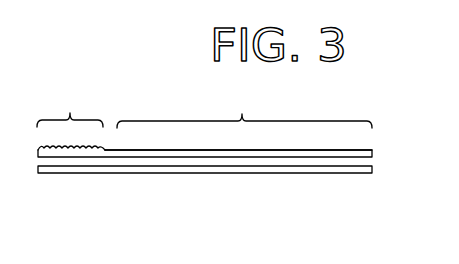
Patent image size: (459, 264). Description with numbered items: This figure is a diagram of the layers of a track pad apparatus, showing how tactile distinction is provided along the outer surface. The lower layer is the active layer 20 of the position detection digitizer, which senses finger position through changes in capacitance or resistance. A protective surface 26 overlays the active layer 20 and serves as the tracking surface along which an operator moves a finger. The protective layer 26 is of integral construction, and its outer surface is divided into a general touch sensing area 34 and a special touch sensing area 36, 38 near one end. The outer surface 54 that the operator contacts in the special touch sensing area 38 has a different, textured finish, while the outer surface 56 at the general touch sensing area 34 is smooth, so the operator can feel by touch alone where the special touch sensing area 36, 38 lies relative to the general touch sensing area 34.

The active layer 20 is at (372, 171).
The protective surface 26 is at (372, 154).
The general touch sensing area 34 is at (244, 108).
The special touch sensing area 36 is at (76, 95).
The special touch sensing area 38 is at (45, 150).
The outer surface 54 is at (50, 126).
The outer surface 56 is at (177, 150).